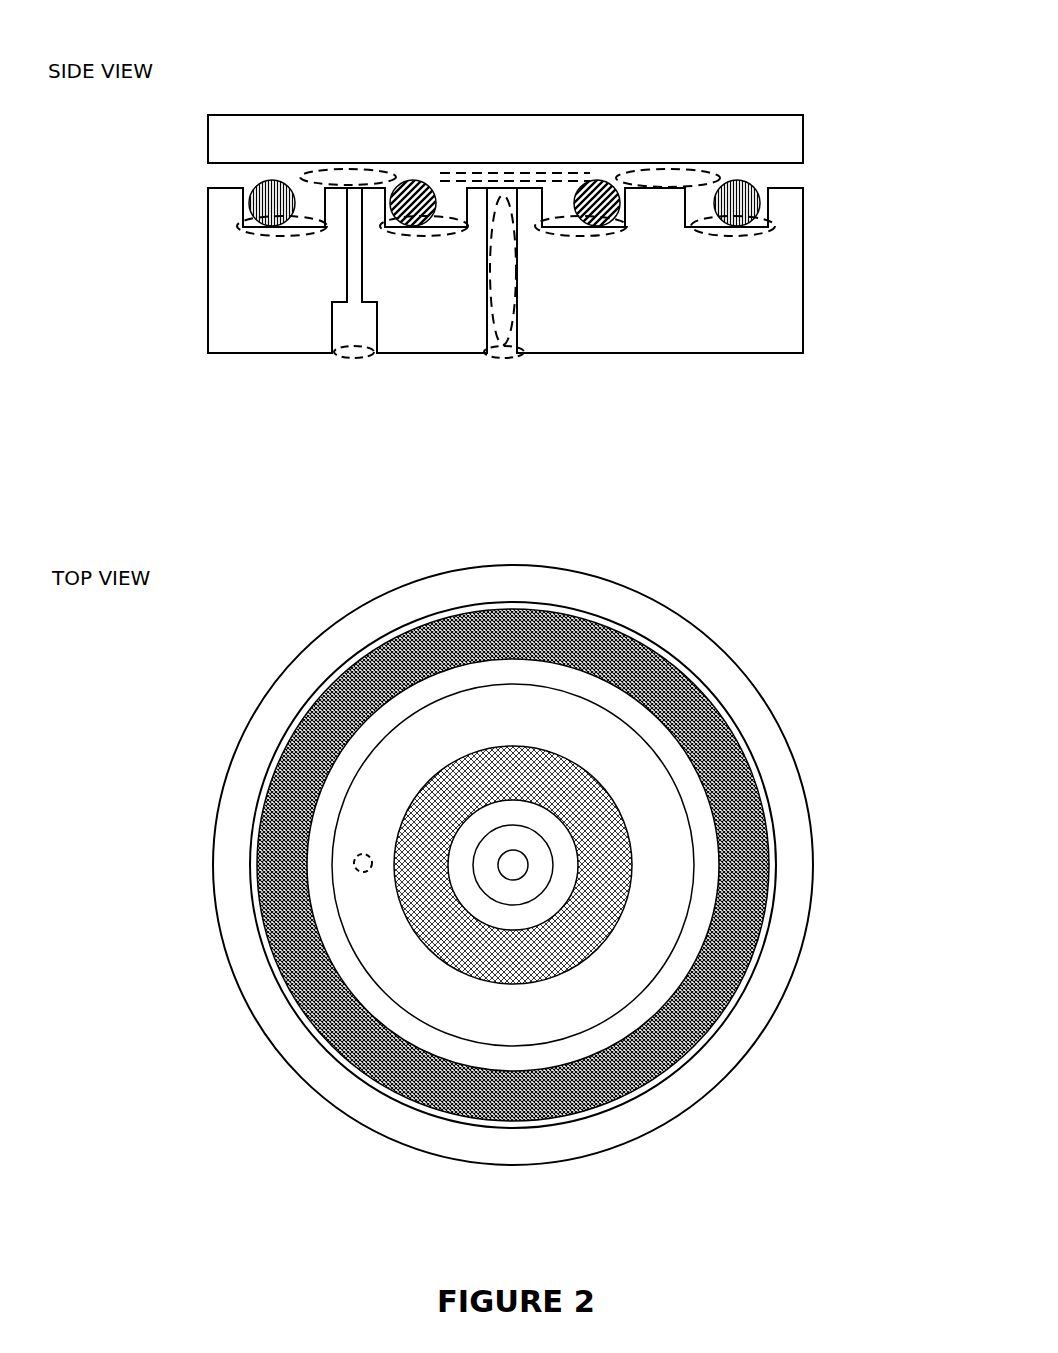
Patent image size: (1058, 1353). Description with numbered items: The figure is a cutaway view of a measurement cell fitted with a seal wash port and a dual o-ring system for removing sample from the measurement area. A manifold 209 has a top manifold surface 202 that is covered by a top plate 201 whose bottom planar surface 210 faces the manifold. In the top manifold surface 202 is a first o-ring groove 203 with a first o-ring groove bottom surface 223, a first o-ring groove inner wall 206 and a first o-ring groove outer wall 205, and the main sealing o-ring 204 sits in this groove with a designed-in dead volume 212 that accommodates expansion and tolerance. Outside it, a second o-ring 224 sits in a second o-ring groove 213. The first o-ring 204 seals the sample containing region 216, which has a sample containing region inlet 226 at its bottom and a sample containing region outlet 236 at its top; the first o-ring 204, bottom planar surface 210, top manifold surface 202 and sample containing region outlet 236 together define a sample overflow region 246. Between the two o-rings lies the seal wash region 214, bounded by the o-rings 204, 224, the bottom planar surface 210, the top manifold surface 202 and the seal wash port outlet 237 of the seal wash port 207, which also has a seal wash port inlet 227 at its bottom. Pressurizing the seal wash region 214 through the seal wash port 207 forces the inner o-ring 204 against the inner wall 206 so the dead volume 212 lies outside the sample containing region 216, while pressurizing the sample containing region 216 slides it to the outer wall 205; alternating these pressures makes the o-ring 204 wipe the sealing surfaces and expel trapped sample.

The top plate 201 is at (256, 116).
The top manifold surface 202 is at (222, 190).
The first o-ring groove 203 is at (427, 238).
The main sealing o-ring 204 is at (414, 177).
The first o-ring groove outer wall 205 is at (383, 198).
The first o-ring groove inner wall 206 is at (470, 205).
The seal wash port 207 is at (353, 348).
The manifold 209 is at (310, 332).
The bottom planar surface 210 is at (768, 163).
The dead volume 212 is at (442, 177).
The second o-ring groove 213 is at (250, 237).
The seal wash region 214 is at (348, 172).
The sample containing region 216 is at (518, 308).
The first o-ring groove bottom surface 223 is at (440, 238).
The second o-ring 224 is at (279, 178).
The sample containing region inlet 226 is at (505, 352).
The seal wash port inlet 227 is at (340, 350).
The sample containing region outlet 236 is at (496, 196).
The seal wash port outlet 237 is at (349, 197).
The sample overflow region 246 is at (505, 173).